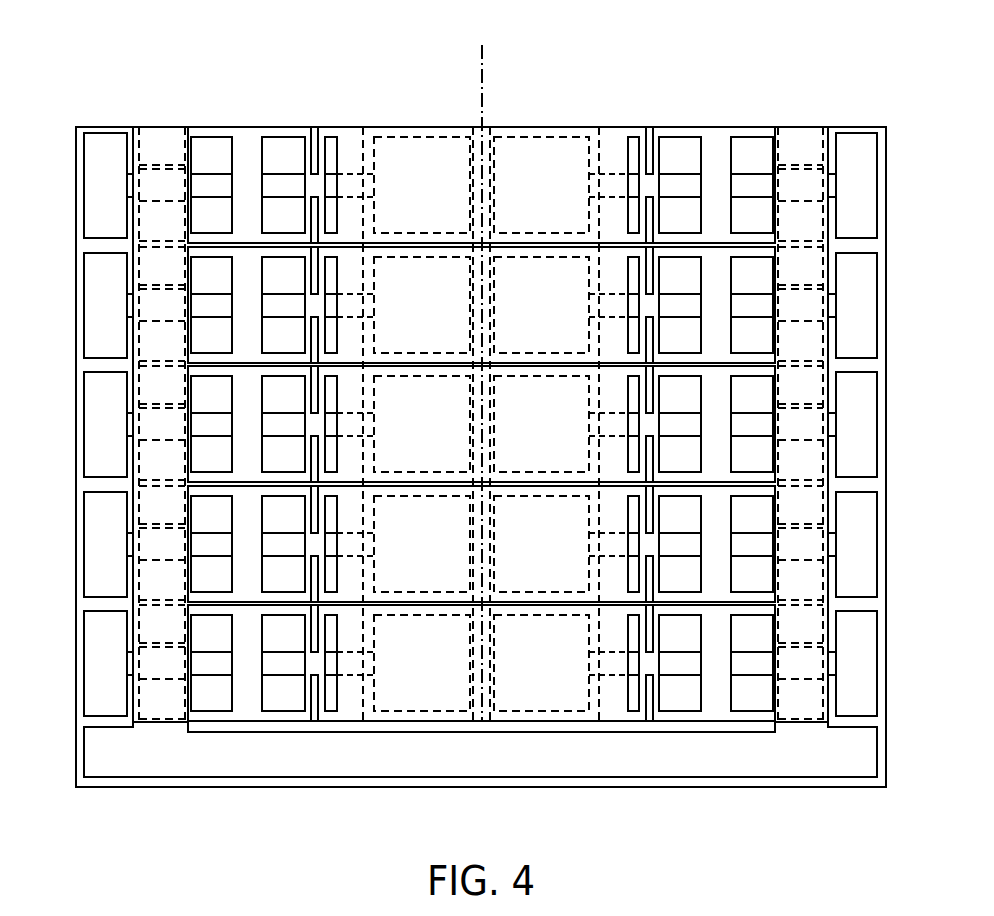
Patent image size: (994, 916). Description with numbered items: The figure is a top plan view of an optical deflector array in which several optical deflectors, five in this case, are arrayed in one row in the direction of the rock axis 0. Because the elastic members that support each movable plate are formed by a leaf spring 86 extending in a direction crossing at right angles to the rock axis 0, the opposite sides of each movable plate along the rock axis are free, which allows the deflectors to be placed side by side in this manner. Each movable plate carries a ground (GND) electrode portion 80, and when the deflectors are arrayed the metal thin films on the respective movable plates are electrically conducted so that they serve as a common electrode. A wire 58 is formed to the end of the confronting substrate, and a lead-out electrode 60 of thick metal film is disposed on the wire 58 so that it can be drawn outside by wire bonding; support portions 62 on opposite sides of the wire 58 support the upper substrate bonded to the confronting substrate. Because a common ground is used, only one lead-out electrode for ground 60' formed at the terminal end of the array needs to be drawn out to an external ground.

The rock axis 0 is at (482, 370).
The ground (GND) electrode portion 80 is at (527, 127).
The wire 58 is at (677, 170).
The leaf spring 86 is at (730, 127).
The support portion 62 is at (802, 126).
The lead-out electrode 60 is at (480, 401).
The lead-out electrode for ground 60' is at (480, 782).